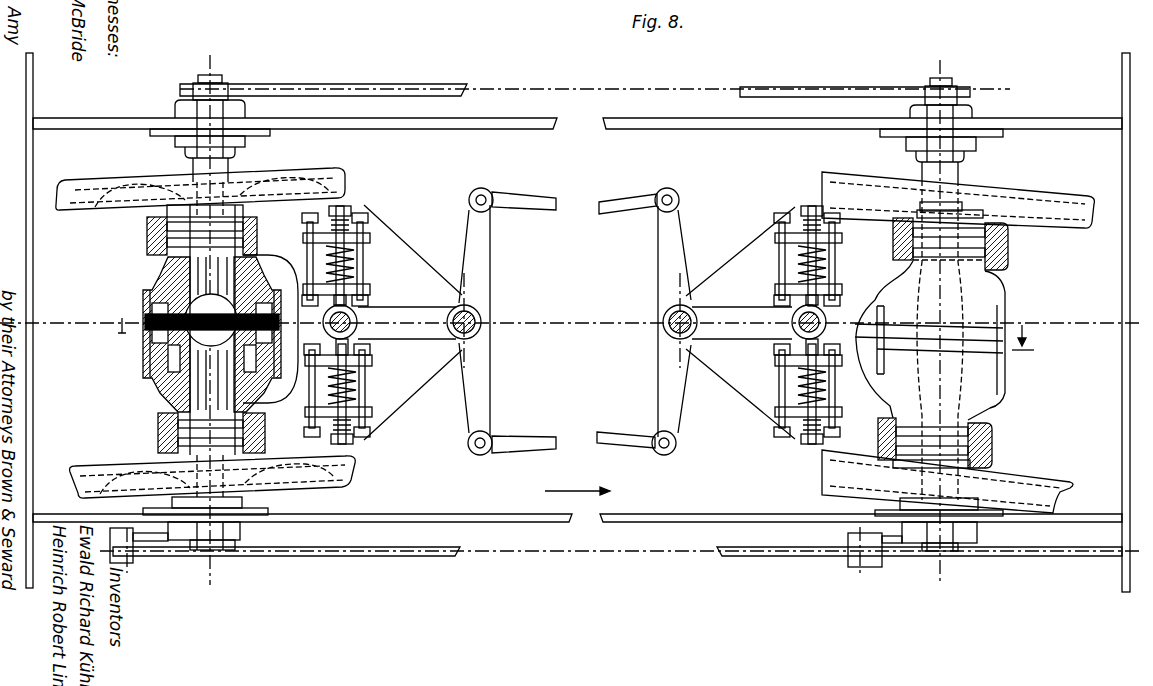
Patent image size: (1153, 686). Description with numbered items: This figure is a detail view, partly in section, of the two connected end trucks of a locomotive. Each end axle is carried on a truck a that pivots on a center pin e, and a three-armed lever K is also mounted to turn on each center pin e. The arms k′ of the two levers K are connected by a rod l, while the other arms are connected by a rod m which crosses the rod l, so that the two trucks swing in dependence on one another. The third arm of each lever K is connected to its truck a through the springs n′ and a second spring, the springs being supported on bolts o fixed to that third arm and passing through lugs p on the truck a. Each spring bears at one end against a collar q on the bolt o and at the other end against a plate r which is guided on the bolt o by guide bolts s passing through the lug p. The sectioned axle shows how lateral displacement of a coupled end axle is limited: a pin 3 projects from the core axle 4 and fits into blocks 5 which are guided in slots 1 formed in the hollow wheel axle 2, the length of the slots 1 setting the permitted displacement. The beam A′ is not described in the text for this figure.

The slots 1 is at (163, 350).
The hollow wheel axle 2 is at (172, 390).
The pin 3 is at (148, 290).
The core axle 4 is at (210, 387).
The blocks 5 is at (142, 301).
The cross beam A′ is at (1037, 197).
The truck a is at (427, 393).
The center pin e is at (483, 307).
The three-armed lever K is at (480, 353).
The lever arm k′ is at (480, 242).
The rod l is at (535, 203).
The rod m is at (523, 448).
The spring n′ is at (347, 263).
The bolt o is at (342, 255).
The lug p is at (310, 238).
The collar q is at (365, 238).
The plate r is at (373, 290).
The guide bolts s is at (312, 260).